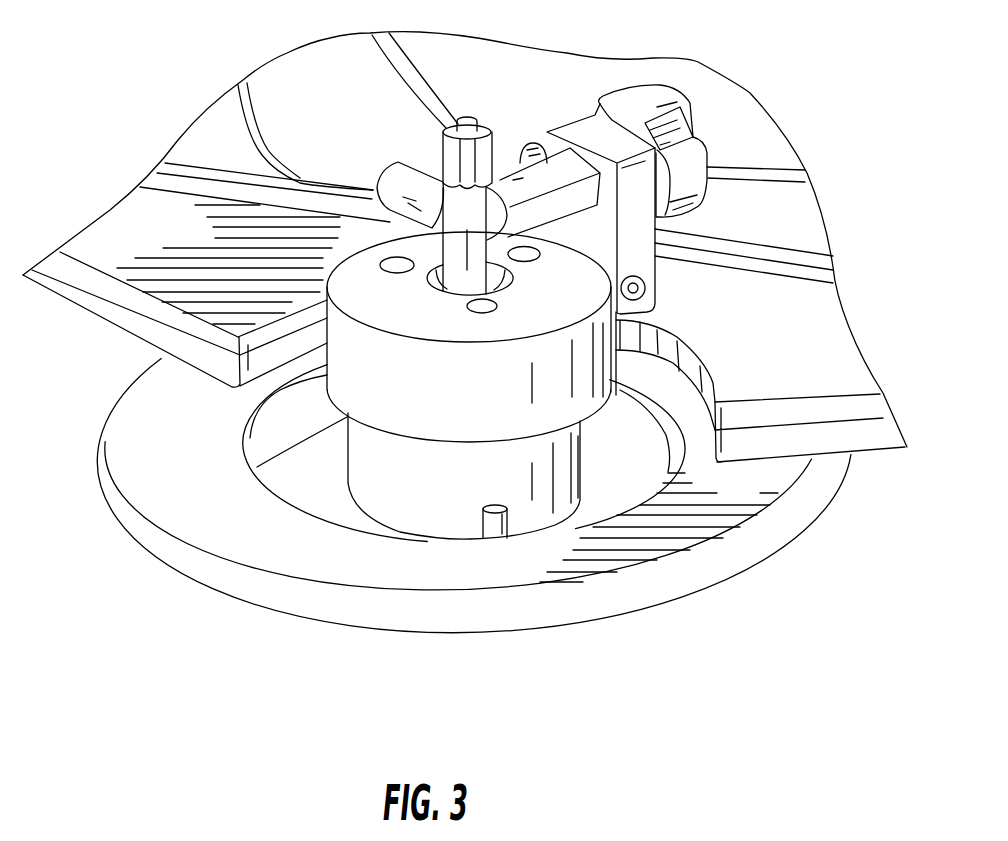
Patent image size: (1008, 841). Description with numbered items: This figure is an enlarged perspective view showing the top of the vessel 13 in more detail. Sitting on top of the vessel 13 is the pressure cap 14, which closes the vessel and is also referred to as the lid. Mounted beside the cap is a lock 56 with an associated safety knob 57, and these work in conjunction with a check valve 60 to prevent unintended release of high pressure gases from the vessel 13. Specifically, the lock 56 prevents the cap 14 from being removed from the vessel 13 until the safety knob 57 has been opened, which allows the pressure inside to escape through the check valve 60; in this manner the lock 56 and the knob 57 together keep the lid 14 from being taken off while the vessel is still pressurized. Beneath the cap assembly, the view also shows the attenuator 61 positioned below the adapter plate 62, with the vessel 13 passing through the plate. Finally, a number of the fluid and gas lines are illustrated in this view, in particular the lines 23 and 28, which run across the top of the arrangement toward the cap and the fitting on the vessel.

The vessel 13 is at (434, 495).
The pressure cap 14 is at (434, 397).
The fluid and gas line 23 is at (257, 141).
The fluid and gas line 28 is at (433, 72).
The lock 56 is at (643, 263).
The safety knob 57 is at (655, 97).
The check valve 60 is at (560, 208).
The attenuator 61 is at (313, 483).
The adapter plate 62 is at (503, 608).